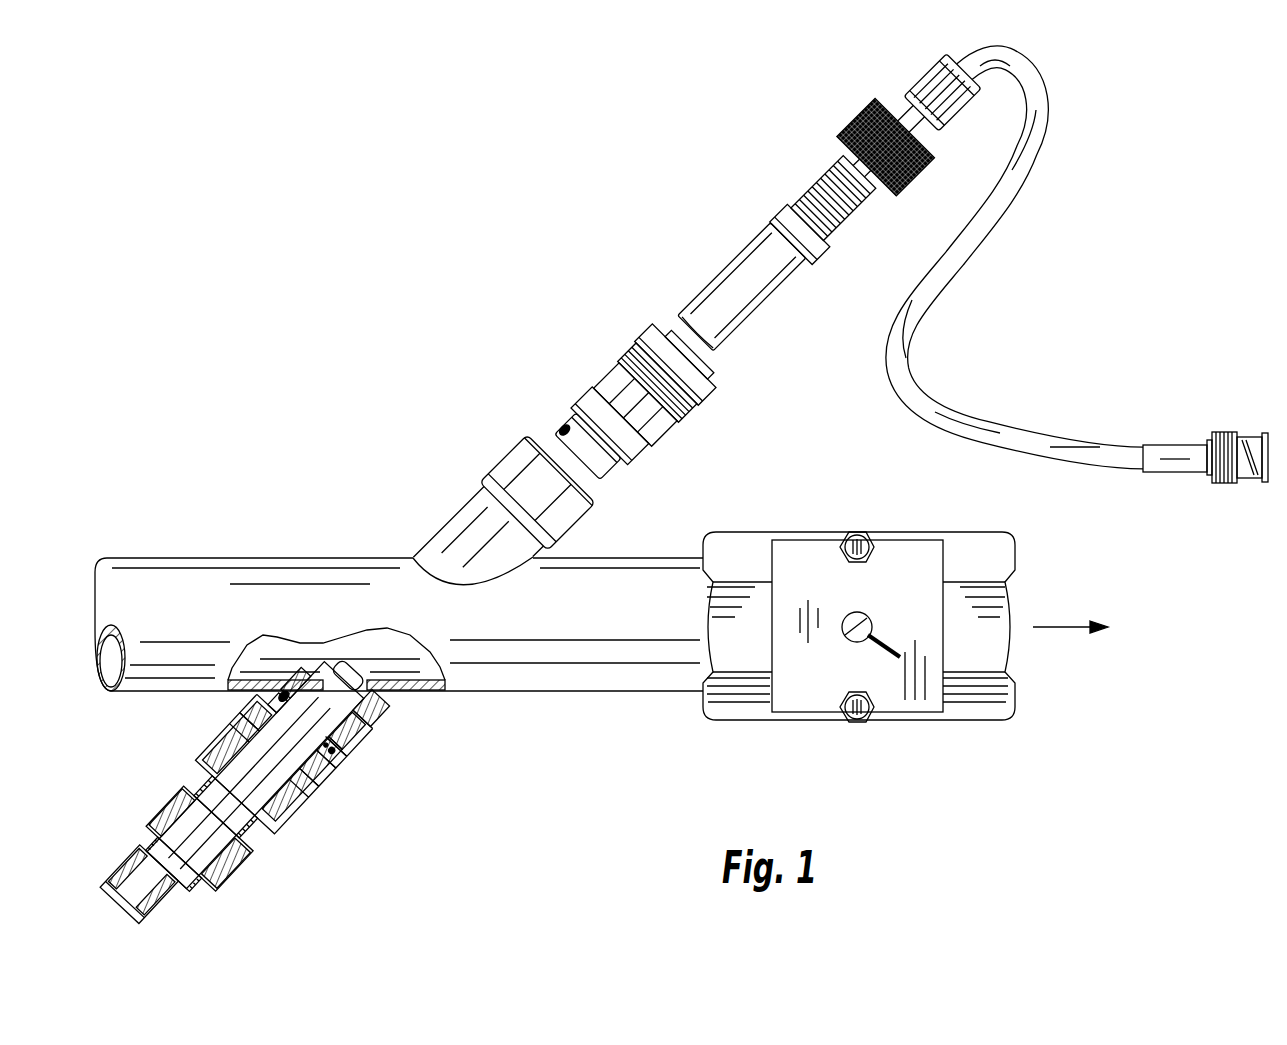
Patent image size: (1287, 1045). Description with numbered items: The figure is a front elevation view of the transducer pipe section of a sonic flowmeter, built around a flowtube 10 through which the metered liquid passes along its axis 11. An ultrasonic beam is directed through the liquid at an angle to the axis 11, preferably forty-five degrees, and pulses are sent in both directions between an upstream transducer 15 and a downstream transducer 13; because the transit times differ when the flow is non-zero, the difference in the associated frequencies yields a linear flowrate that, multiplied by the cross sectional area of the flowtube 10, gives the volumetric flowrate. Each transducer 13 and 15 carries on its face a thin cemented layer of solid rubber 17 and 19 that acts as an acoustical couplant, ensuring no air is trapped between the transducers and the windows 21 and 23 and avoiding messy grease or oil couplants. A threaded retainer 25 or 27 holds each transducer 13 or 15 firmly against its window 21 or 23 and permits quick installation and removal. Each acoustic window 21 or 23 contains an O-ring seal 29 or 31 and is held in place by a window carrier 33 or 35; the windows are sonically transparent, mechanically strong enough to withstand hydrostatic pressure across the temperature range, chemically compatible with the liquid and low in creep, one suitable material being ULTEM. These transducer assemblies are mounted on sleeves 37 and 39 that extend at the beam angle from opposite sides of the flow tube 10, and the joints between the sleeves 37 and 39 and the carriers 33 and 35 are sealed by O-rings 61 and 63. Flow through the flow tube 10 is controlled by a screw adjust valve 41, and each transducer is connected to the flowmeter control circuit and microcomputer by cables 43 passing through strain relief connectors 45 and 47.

The flowtube 10 is at (528, 705).
The axis 11 is at (580, 652).
The downstream transducer 13 is at (772, 292).
The upstream transducer 15 is at (245, 820).
The layer of solid rubber 17 is at (708, 350).
The layer of solid rubber 19 is at (334, 760).
The window 21 is at (592, 478).
The window 23 is at (380, 702).
The threaded retainer 25 is at (865, 112).
The threaded retainer 27 is at (222, 870).
The O-ring seal 29 is at (566, 418).
The O-ring seal 31 is at (278, 695).
The window carrier 33 is at (607, 368).
The window carrier 35 is at (282, 838).
The sleeve 37 is at (467, 507).
The sleeve 39 is at (358, 740).
The screw adjust valve 41 is at (893, 703).
The cables 43 is at (930, 381).
The strain relief connector 45 is at (926, 80).
The strain relief connector 47 is at (160, 905).
The O-ring 61 is at (632, 456).
The O-ring 63 is at (318, 790).